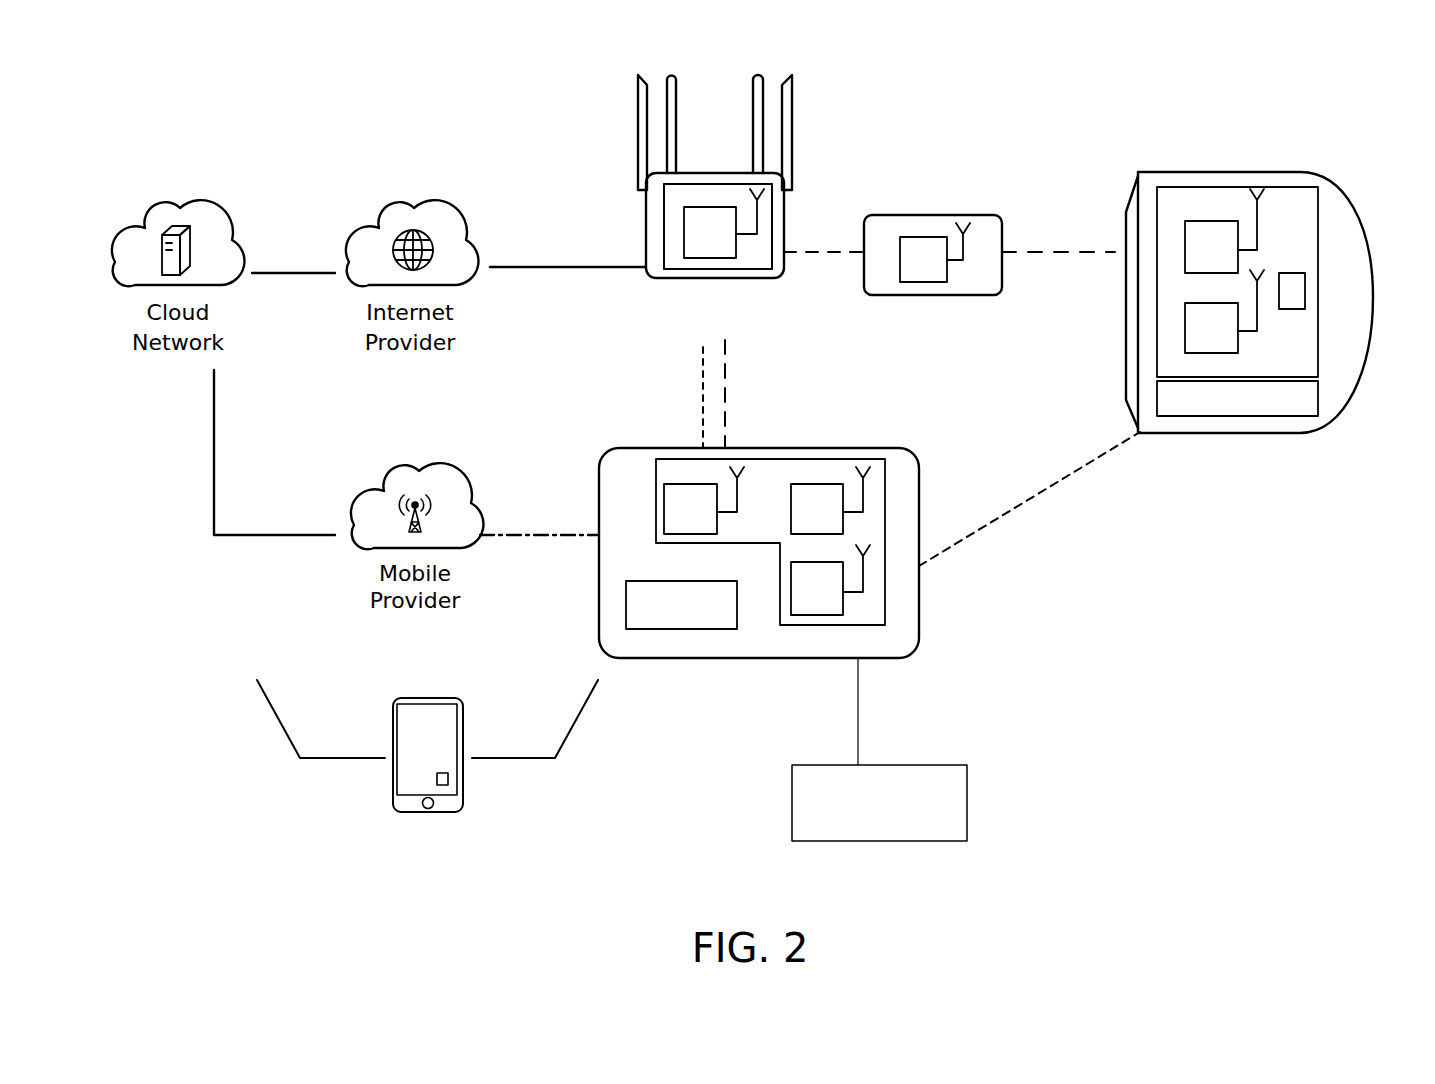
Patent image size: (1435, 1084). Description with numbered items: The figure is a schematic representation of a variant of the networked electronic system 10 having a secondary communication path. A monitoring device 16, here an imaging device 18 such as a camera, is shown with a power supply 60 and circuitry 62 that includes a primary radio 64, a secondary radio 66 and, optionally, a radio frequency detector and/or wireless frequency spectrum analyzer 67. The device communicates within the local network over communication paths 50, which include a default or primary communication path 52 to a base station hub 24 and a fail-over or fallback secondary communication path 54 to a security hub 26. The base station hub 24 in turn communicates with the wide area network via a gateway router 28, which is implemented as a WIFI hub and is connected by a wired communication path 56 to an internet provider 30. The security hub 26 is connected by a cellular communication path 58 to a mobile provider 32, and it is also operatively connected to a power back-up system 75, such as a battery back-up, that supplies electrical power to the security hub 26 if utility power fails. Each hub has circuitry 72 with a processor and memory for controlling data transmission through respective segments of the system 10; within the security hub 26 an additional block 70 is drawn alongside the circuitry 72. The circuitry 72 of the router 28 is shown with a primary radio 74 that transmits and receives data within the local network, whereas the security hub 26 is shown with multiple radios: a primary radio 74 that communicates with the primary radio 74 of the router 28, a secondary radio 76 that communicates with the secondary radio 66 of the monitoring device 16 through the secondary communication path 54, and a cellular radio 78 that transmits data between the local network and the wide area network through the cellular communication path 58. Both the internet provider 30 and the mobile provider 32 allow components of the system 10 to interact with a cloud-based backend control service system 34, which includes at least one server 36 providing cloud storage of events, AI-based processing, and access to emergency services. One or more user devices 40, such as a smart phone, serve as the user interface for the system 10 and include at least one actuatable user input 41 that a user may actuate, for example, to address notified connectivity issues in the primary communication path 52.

The networked electronic system 10 is at (1117, 710).
The monitoring device 16 is at (1357, 188).
The imaging device 18 is at (1396, 255).
The base station hub 24 is at (930, 215).
The security hub 26 is at (683, 448).
The gateway router 28 is at (640, 98).
The internet provider 30 is at (455, 235).
The mobile provider 32 is at (455, 485).
The cloud-based backend control service system 34 is at (232, 243).
The server 36 is at (180, 226).
The user device 40 is at (412, 765).
The actuatable user input 41 is at (450, 780).
The communication paths 50 is at (1116, 348).
The primary communication path 52 is at (1032, 248).
The secondary communication path 54 is at (702, 365).
The wired communication path 56 is at (540, 265).
The cellular communication path 58 is at (512, 533).
The power supply 60 is at (1237, 398).
The circuitry 62 is at (1298, 192).
The primary radio 64 is at (1185, 227).
The secondary radio 66 is at (1185, 345).
The wireless frequency spectrum analyzer 67 is at (1305, 293).
The processor 70 is at (681, 605).
The circuitry 72 is at (880, 627).
The primary radio 74 is at (833, 485).
The power back-up system 75 is at (933, 841).
The secondary radio 76 is at (843, 607).
The cellular radio 78 is at (664, 500).